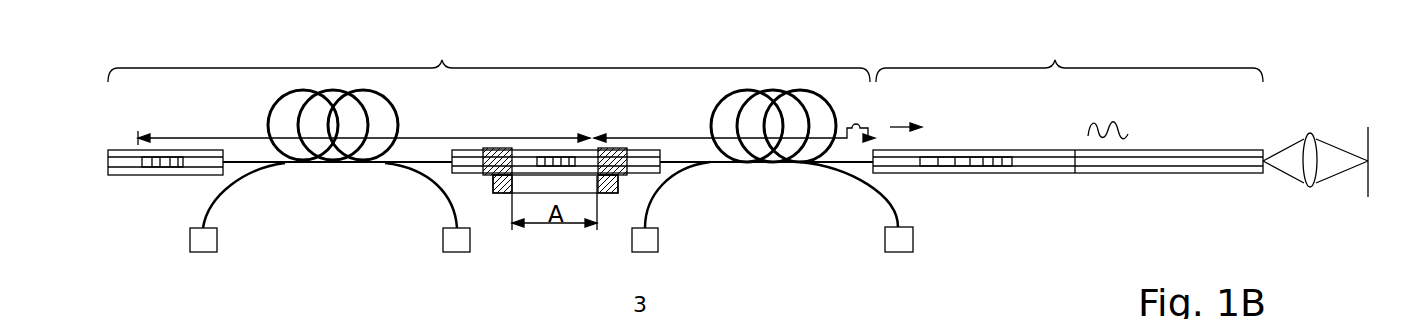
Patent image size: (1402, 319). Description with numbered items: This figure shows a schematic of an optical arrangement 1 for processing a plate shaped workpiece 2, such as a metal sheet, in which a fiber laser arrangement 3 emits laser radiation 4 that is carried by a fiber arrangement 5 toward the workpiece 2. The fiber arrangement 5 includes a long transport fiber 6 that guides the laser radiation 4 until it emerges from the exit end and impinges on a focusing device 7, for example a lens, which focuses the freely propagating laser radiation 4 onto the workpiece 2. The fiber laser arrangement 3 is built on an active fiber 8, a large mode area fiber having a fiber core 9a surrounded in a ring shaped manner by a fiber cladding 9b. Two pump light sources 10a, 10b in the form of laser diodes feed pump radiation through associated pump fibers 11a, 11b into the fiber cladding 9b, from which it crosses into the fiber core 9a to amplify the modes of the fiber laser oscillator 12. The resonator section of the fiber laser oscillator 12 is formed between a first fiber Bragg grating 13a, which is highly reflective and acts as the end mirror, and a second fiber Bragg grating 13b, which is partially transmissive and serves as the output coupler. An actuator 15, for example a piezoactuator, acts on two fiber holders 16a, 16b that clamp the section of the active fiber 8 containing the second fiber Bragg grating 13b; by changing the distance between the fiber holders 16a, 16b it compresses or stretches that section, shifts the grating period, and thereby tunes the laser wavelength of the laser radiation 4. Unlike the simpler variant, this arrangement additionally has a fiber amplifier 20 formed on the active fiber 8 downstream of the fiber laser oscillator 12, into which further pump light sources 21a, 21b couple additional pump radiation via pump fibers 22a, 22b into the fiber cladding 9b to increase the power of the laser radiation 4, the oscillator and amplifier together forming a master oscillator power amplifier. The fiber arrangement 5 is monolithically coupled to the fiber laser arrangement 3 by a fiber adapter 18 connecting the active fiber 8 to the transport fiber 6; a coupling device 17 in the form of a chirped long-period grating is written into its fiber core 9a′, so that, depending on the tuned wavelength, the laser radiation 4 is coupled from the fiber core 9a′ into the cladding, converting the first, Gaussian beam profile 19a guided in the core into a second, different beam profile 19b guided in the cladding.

The optical arrangement 1 is at (1318, 88).
The workpiece 2 is at (1370, 128).
The fiber laser arrangement 3 is at (489, 59).
The laser radiation 4 is at (896, 127).
The fiber arrangement 5 is at (1069, 59).
The transport fiber 6 is at (1213, 133).
The focusing device 7 is at (1312, 158).
The active fiber 8 is at (458, 135).
The fiber core 9a is at (118, 175).
The fiber cladding 9b is at (119, 150).
The fiber core 9a′ is at (1035, 167).
The pump light source 10a is at (213, 240).
The pump light source 10b is at (445, 240).
The pump fiber 11a is at (223, 183).
The pump fiber 11b is at (438, 185).
The fiber laser oscillator 12 is at (230, 138).
The first fiber Bragg grating 13a is at (172, 168).
The second fiber Bragg grating 13b is at (545, 158).
The actuator 15 is at (563, 185).
The fiber holder 16a is at (485, 182).
The fiber holder 16b is at (612, 150).
The coupling device 17 is at (990, 160).
The fiber adapter 18 is at (960, 188).
The first beam profile 19a is at (847, 128).
The second beam profile 19b is at (1088, 132).
The fiber amplifier 20 is at (662, 138).
The further pump light source 21a is at (650, 240).
The further pump light source 21b is at (886, 240).
The pump fiber 22a is at (673, 190).
The pump fiber 22b is at (868, 186).